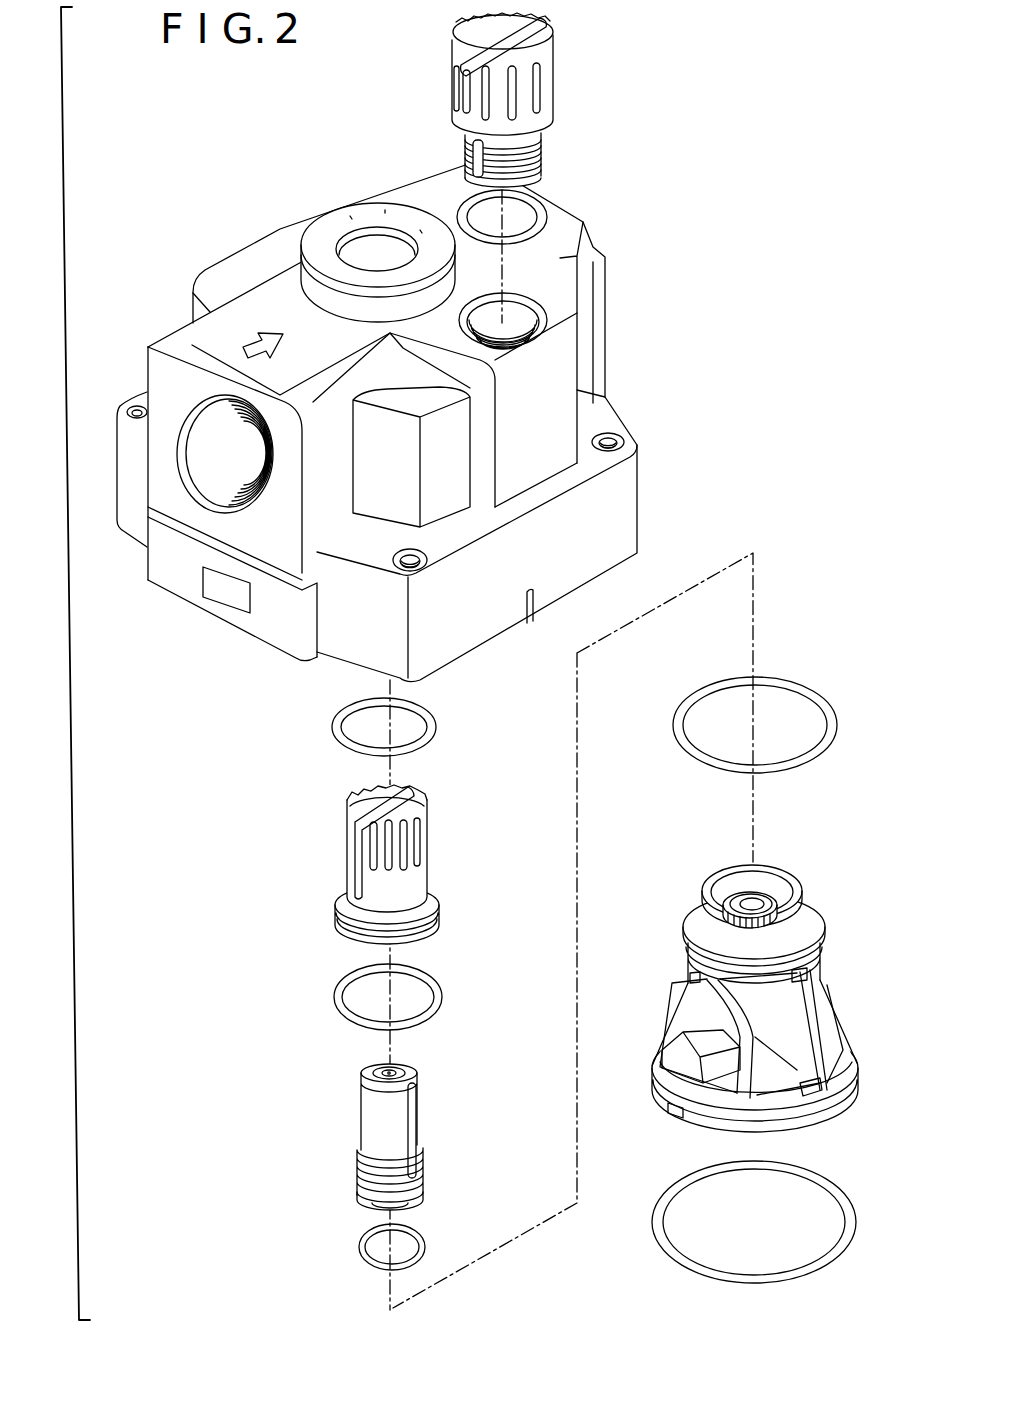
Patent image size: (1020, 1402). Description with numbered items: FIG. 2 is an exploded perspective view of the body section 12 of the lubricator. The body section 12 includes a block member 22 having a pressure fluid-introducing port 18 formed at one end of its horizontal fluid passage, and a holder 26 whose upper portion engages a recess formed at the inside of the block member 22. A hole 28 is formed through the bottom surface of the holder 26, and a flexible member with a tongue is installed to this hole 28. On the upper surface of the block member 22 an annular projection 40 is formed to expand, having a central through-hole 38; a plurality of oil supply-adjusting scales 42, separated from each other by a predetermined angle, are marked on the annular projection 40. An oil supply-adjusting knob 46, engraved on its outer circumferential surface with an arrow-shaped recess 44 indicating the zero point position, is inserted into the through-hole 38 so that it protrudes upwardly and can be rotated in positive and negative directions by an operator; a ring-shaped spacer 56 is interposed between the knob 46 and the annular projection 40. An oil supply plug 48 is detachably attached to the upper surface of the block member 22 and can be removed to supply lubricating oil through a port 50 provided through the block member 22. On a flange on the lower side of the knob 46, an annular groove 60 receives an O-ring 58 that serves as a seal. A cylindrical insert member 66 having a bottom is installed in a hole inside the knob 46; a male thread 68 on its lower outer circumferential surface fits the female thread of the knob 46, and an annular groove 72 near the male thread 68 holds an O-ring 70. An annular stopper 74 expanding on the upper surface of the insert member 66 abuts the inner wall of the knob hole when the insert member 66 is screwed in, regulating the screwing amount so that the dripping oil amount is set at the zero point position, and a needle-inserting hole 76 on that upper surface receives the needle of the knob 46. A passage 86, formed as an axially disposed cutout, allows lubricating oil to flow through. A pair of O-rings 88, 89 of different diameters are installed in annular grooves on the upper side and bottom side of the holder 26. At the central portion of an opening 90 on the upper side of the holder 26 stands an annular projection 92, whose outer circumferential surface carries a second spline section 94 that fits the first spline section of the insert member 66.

The body section 12 is at (673, 183).
The pressure fluid-introducing port 18 is at (235, 468).
The block member 22 is at (615, 513).
The holder 26 is at (824, 921).
The hole 28 is at (720, 1060).
The central through-hole 38 is at (353, 240).
The annular projection 40 is at (305, 287).
The oil supply-adjusting scales 42 is at (398, 224).
The arrow-shaped recess 44 is at (360, 878).
The oil supply-adjusting knob 46 is at (431, 836).
The oil supply plug 48 is at (556, 36).
The port 50 is at (523, 317).
The ring-shaped spacer 56 is at (433, 727).
The O-ring 58 is at (433, 975).
The annular groove 60 is at (436, 911).
The insert member 66 is at (424, 1102).
The male thread 68 is at (363, 1170).
The O-ring 70 is at (420, 1243).
The annular groove 72 is at (403, 1200).
The annular stopper 74 is at (398, 1068).
The needle-inserting hole 76 is at (383, 1068).
The passage 86 is at (417, 1138).
The O-ring 88 is at (800, 692).
The O-ring 89 is at (841, 1200).
The opening 90 is at (772, 882).
The annular projection 92 is at (767, 892).
The second spline section 94 is at (698, 934).